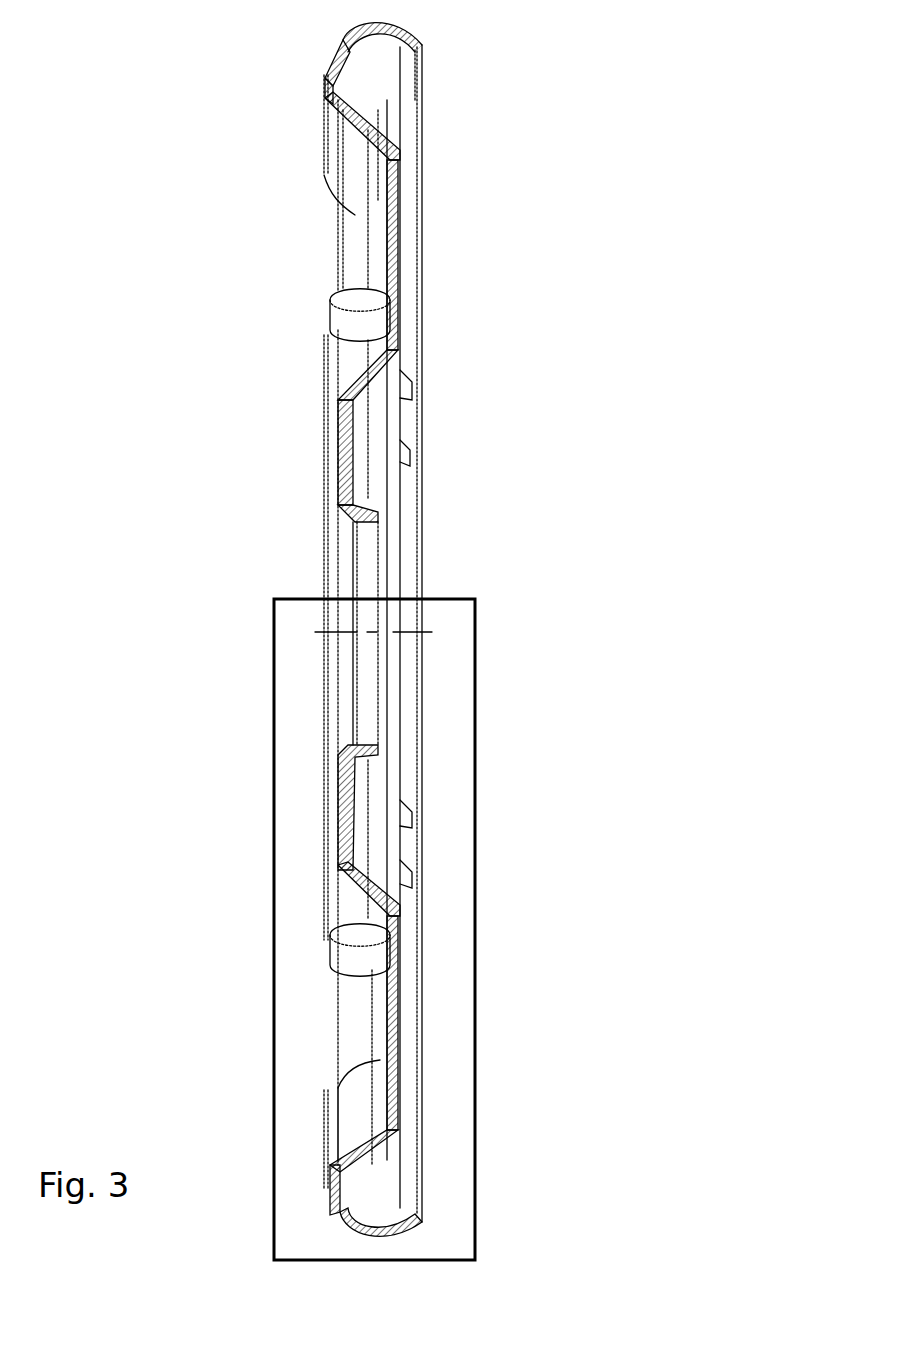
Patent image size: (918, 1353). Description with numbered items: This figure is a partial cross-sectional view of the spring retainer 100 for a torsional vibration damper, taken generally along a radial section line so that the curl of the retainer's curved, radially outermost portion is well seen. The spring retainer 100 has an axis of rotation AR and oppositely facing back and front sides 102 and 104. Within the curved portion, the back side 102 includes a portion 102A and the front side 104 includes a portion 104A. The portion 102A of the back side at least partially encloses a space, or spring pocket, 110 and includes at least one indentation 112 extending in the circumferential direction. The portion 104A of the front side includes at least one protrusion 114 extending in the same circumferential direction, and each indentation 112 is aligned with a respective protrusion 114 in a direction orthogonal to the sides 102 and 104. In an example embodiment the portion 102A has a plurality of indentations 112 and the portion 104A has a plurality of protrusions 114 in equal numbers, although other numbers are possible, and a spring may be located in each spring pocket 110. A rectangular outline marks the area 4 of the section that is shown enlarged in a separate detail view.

The spring retainer 100 is at (664, 52).
The back side 102 is at (412, 320).
The portion of back side 102A is at (376, 78).
The front side 104 is at (382, 248).
The portion of front side 104A is at (355, 165).
The spring pocket 110 is at (385, 1175).
The indentation 112 is at (350, 90).
The protrusion 114 is at (343, 40).
The area 4 is at (272, 652).
The axis of rotation AR is at (432, 632).